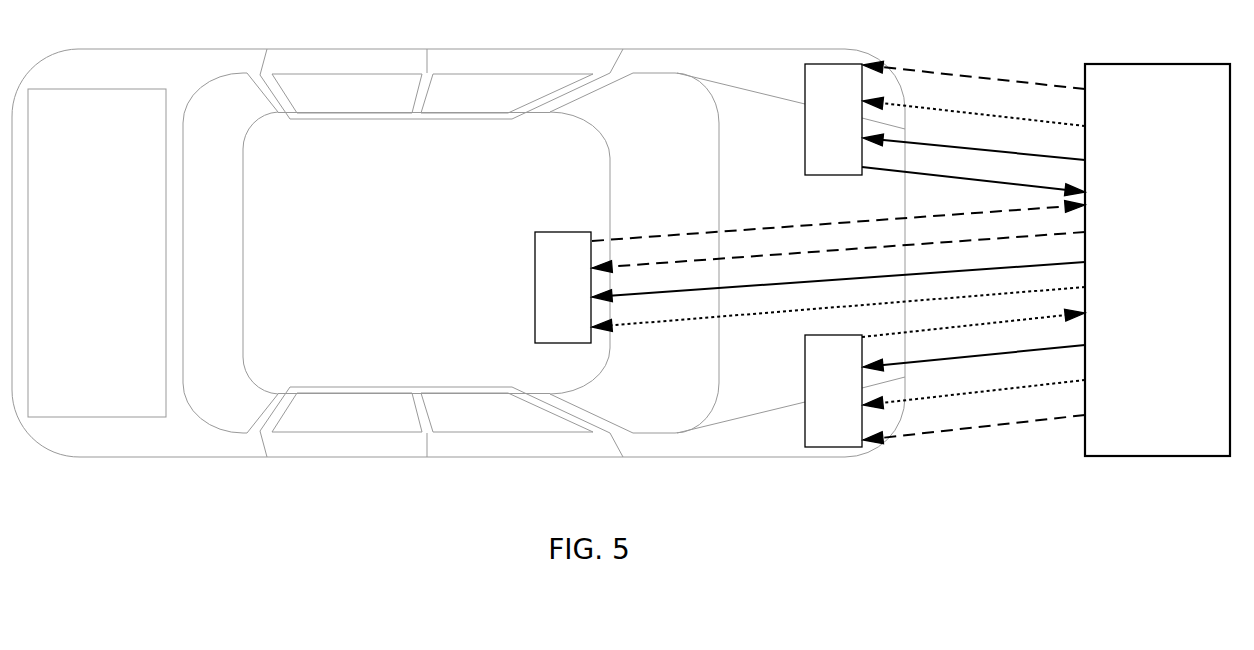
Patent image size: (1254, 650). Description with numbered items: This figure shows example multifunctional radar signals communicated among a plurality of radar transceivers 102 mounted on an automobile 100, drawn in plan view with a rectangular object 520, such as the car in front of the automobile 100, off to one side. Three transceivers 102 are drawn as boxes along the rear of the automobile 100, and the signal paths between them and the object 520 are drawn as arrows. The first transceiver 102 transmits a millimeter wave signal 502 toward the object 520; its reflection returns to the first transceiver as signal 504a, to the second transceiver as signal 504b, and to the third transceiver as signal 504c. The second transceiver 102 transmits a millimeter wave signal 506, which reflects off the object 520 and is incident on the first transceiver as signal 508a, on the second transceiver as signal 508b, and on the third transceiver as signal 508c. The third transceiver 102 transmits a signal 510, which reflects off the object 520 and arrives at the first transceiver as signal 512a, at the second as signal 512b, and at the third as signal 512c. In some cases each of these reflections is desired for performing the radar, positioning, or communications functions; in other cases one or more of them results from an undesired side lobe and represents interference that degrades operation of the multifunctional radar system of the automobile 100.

The automobile 100 is at (247, 49).
The radar transceiver 102 is at (541, 298).
The millimeter wave signal 502 is at (966, 180).
The signal 504a is at (945, 146).
The signal 504b is at (745, 288).
The signal 504c is at (943, 360).
The millimeter wave signal 506 is at (771, 230).
The signal 508a is at (960, 75).
The signal 508b is at (823, 255).
The signal 508c is at (958, 431).
The signal 510 is at (978, 323).
The signal 512a is at (983, 116).
The signal 512b is at (784, 315).
The signal 512c is at (996, 390).
The object 520 is at (1138, 272).